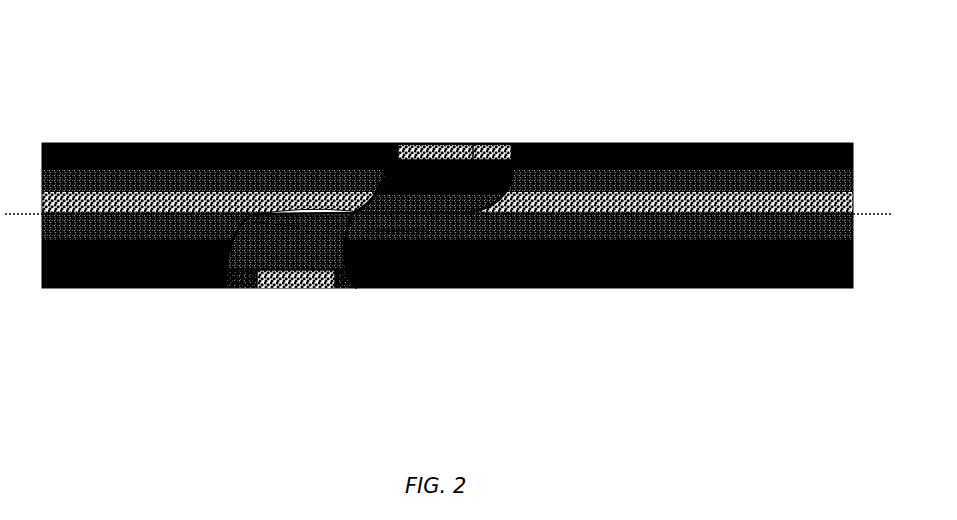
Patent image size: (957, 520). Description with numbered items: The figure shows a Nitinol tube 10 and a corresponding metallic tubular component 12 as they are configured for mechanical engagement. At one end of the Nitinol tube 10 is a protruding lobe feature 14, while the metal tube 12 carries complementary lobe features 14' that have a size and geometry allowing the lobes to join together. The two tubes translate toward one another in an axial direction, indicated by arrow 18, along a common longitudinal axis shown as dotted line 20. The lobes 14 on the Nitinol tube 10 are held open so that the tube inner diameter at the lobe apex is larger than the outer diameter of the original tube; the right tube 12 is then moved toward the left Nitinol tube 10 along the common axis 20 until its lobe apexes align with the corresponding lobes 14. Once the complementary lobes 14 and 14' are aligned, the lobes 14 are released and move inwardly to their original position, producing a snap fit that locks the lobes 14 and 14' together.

The Nitinol tube 10 is at (464, 208).
The metallic tubular component 12 is at (447, 203).
The lobe feature 14 is at (289, 158).
The lobe feature 14' is at (405, 203).
The arrow 18 is at (333, 228).
The common longitudinal axis 20 is at (845, 214).